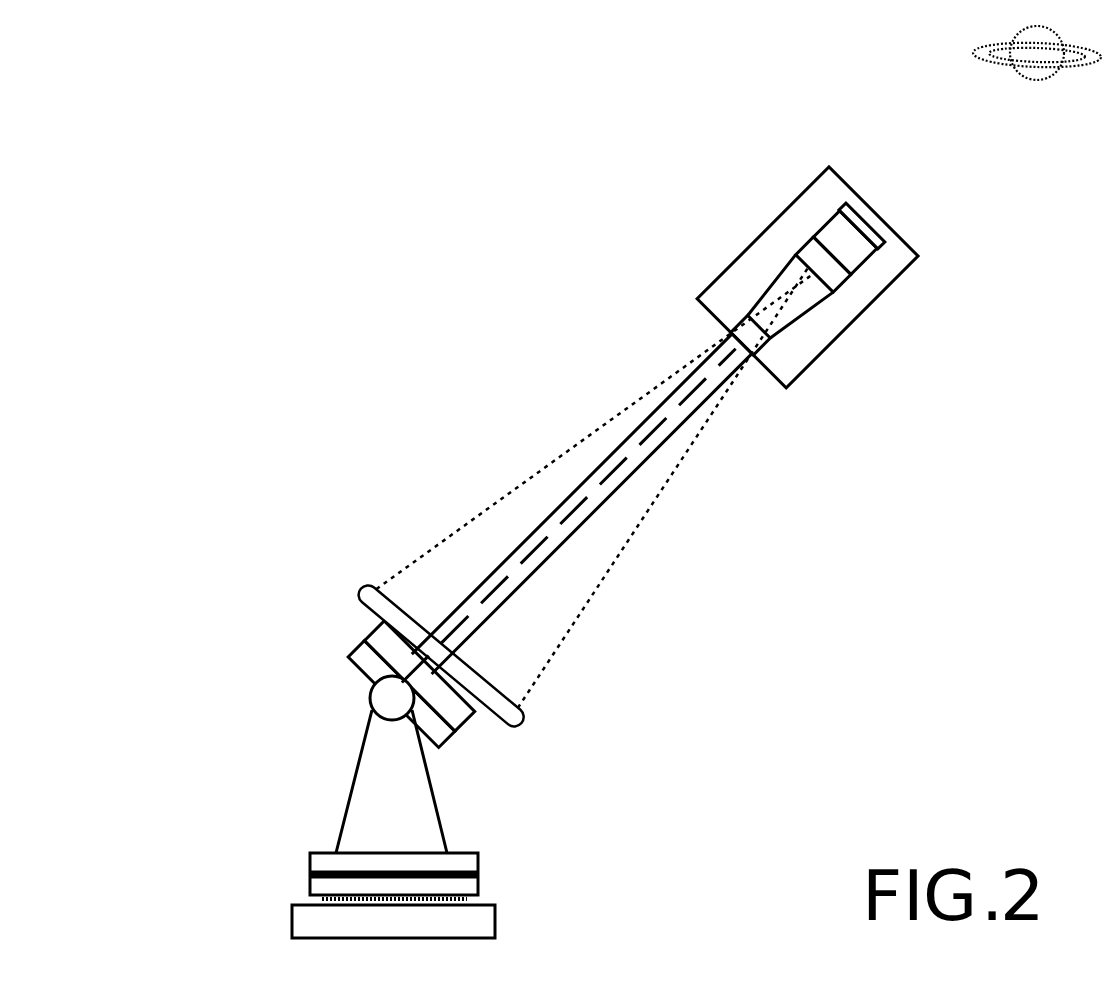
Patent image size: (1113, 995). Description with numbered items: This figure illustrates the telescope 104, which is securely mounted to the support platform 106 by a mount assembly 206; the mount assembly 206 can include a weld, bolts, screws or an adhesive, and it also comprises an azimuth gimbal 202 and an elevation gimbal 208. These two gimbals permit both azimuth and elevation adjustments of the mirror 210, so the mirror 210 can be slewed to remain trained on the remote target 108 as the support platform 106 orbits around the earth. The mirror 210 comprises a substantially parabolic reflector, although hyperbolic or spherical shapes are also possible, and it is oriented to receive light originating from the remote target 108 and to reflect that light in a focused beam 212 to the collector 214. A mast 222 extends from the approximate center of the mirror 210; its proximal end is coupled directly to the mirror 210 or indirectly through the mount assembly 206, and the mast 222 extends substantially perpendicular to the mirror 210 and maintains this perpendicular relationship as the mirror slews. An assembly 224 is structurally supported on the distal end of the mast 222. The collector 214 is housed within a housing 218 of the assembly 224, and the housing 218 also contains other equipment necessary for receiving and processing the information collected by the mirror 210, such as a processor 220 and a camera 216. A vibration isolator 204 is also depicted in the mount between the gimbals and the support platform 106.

The telescope 104 is at (392, 382).
The support platform 106 is at (495, 925).
The remote target 108 is at (1038, 82).
The azimuth gimbal 202 is at (310, 887).
The Vibration Isolator 204 is at (478, 857).
The mount assembly 206 is at (322, 772).
The elevation gimbal 208 is at (393, 698).
The mirror 210 is at (517, 714).
The focused beam 212 is at (625, 547).
The collector 214 is at (848, 280).
The camera 216 is at (868, 268).
The housing 218 is at (912, 247).
The processor 220 is at (837, 210).
The mast 222 is at (515, 597).
The assembly 224 is at (692, 267).